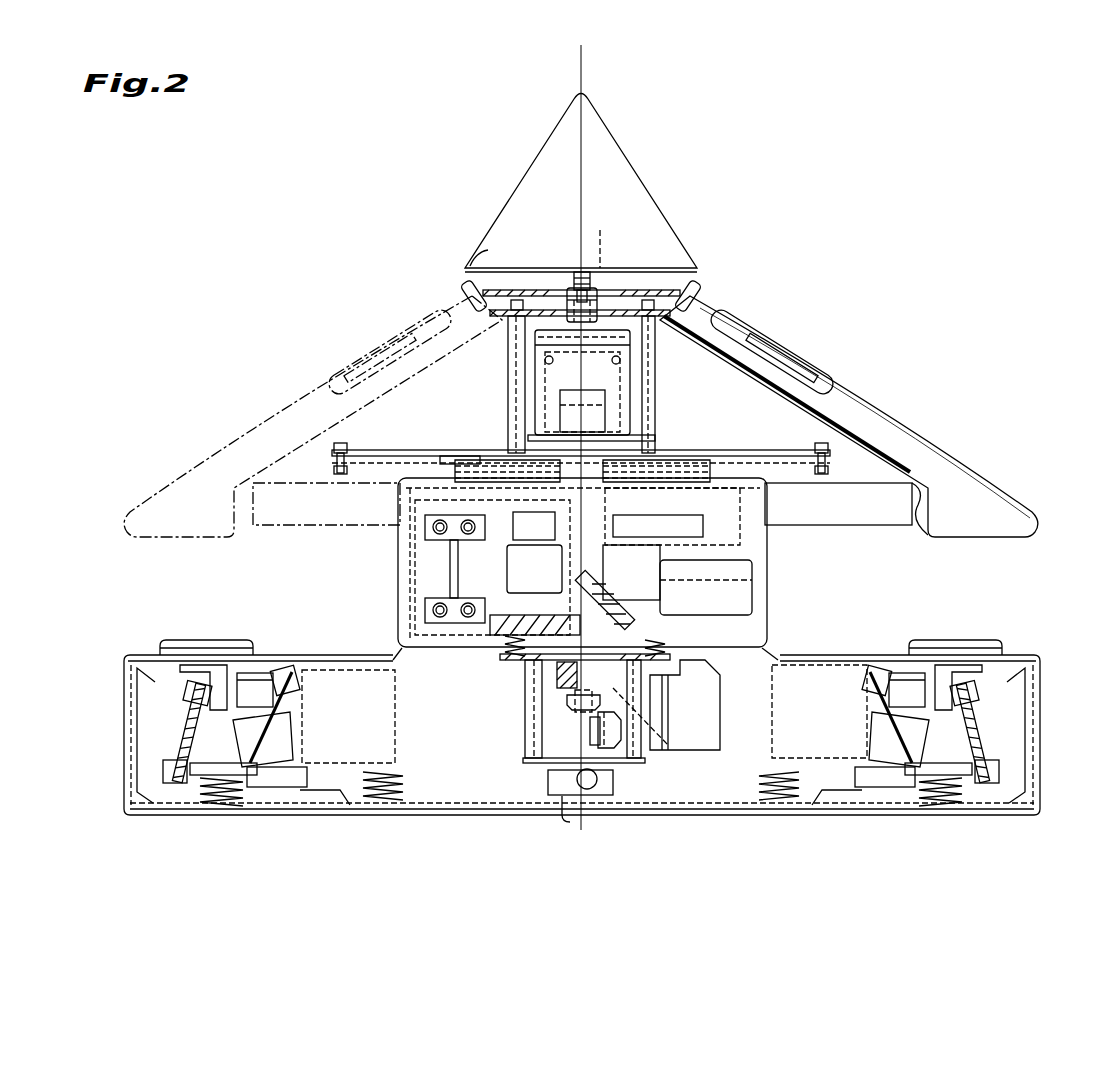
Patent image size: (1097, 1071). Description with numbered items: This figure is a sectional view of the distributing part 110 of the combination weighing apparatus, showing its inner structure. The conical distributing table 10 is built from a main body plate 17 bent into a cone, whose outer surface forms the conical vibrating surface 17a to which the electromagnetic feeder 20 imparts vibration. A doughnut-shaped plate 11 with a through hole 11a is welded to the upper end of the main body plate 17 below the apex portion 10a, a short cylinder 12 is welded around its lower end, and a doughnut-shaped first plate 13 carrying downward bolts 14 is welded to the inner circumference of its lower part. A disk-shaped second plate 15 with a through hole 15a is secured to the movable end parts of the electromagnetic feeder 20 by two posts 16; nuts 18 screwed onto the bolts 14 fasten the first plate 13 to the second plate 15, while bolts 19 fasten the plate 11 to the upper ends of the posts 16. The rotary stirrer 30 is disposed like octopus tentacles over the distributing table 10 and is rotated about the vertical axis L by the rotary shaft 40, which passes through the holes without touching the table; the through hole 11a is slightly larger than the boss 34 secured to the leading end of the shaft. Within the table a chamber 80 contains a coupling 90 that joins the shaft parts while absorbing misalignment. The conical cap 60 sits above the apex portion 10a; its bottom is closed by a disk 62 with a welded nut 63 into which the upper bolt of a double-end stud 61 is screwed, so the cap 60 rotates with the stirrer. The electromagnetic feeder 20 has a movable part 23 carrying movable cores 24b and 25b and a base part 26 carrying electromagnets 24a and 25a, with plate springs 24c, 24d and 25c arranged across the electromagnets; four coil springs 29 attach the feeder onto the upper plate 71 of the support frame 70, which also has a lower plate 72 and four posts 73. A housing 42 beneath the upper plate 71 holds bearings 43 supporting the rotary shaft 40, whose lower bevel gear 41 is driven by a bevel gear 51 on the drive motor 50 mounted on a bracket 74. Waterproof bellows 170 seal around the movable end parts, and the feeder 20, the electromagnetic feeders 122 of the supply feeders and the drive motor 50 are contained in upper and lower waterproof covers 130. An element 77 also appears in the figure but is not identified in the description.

The vertical axis L is at (576, 72).
The conical cap 60 is at (600, 134).
The disk 62 is at (484, 262).
The double-end stud 61 is at (606, 233).
The nut 63 is at (577, 275).
The boss 34 is at (590, 292).
The through hole 11a is at (566, 305).
The apex portion 10a is at (638, 305).
The bolts 19 is at (492, 312).
The doughnut-shaped plate 11 is at (640, 318).
The bolts 14 is at (330, 420).
The main body plate 17 is at (745, 345).
The conical vibrating surface 17a is at (772, 362).
The rotary stirrer 30 is at (780, 315).
The conical distributing table 10 is at (800, 348).
The first plate 13 is at (800, 432).
The short cylinder 12 is at (916, 520).
The posts 16 is at (508, 398).
The coupling 90 is at (570, 392).
The chamber 80 is at (615, 395).
The second plate 15 is at (378, 458).
The through hole 15a is at (500, 456).
The waterproof bellows 170 is at (460, 468).
The nuts 18 is at (330, 465).
The rotary shaft 40 is at (780, 497).
The electromagnetic feeder 20 is at (770, 552).
The movable part 23 is at (425, 505).
The movable core 24b is at (513, 530).
The electromagnet 24a is at (520, 570).
The plate spring 24c is at (485, 605).
The movable core 25b is at (705, 528).
The plate spring 25c is at (640, 560).
The electromagnet 25a is at (690, 575).
The plate spring 24d is at (622, 592).
The coil springs 29 is at (505, 650).
The base part 26 is at (398, 652).
The waterproof covers 130 is at (770, 640).
The electromagnetic feeders 122 is at (262, 640).
The upper plate 71 is at (505, 662).
The posts 73 is at (532, 745).
The housing 42 is at (558, 672).
The bearings 43 is at (564, 700).
The bevel gear 41 is at (566, 712).
The bevel gear 51 is at (596, 738).
The drive motor 50 is at (705, 718).
The bracket 74 is at (675, 752).
The lower plate 72 is at (545, 780).
The bracket 77 is at (565, 815).
The support frame 70 is at (470, 720).
The distributing part 110 is at (860, 212).